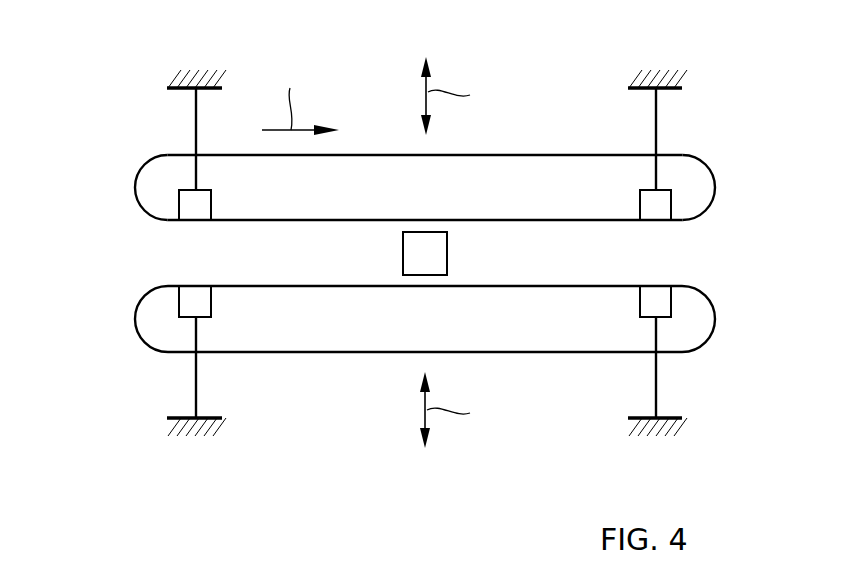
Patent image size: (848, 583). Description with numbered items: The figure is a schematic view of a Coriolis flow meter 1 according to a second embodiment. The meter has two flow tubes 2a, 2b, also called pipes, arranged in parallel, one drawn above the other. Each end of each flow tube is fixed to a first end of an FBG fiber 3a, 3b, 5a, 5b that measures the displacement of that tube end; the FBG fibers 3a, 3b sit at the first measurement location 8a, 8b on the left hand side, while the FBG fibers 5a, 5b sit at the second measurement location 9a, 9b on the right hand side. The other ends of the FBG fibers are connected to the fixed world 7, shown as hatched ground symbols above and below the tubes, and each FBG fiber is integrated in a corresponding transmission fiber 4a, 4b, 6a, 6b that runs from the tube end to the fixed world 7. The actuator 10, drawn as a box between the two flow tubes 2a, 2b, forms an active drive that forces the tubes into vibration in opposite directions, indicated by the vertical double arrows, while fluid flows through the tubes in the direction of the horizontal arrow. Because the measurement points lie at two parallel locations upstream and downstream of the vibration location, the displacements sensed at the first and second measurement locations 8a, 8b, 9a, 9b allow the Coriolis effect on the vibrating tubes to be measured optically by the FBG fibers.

The Coriolis flow meter 1 is at (549, 72).
The flow tube 2a is at (588, 153).
The flow tube 2b is at (590, 354).
The FBG fiber 3a is at (179, 202).
The FBG fiber 3b is at (179, 303).
The transmission fiber 4a is at (193, 122).
The transmission fiber 4b is at (195, 388).
The FBG fiber 5a is at (671, 202).
The FBG fiber 5b is at (671, 302).
The transmission fiber 6a is at (657, 122).
The transmission fiber 6b is at (657, 388).
The fixed world 7 is at (181, 86).
The first measurement location 8a is at (165, 168).
The first measurement location 8b is at (165, 340).
The second measurement location 9a is at (686, 168).
The second measurement location 9b is at (686, 340).
The actuator 10 is at (447, 253).